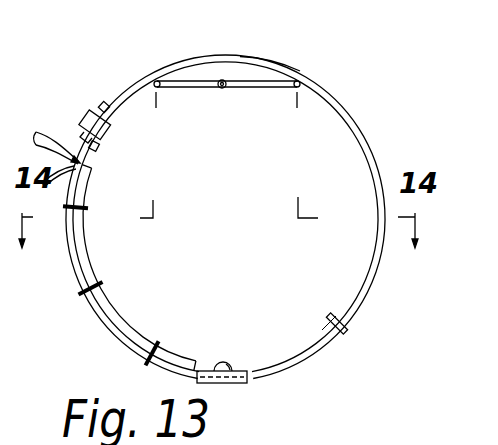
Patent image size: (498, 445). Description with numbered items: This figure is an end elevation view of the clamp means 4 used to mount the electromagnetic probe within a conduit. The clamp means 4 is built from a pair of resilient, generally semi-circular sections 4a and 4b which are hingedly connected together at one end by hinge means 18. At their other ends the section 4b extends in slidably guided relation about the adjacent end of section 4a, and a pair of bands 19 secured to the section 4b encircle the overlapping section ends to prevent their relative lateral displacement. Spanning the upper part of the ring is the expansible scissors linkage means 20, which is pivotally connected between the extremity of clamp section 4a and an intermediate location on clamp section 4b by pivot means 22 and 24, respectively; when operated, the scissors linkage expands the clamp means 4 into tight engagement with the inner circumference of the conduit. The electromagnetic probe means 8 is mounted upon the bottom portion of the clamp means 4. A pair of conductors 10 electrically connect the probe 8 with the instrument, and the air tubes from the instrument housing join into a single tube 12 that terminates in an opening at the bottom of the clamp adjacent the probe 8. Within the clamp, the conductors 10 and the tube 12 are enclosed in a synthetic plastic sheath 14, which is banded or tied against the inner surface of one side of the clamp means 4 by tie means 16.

The clamp means 4 is at (338, 100).
The semi-circular clamp section 4a is at (110, 129).
The semi-circular clamp section 4b is at (276, 63).
The electromagnetic probe means 8 is at (226, 362).
The conductors 10 is at (45, 140).
The air tube 12 is at (56, 187).
The synthetic plastic sheath 14 is at (113, 320).
The tie means 16 is at (88, 207).
The hinge means 18 is at (331, 325).
The bands 19 is at (92, 110).
The expansible scissors linkage means 20 is at (188, 83).
The pivot means 22 is at (156, 80).
The pivot means 24 is at (301, 85).